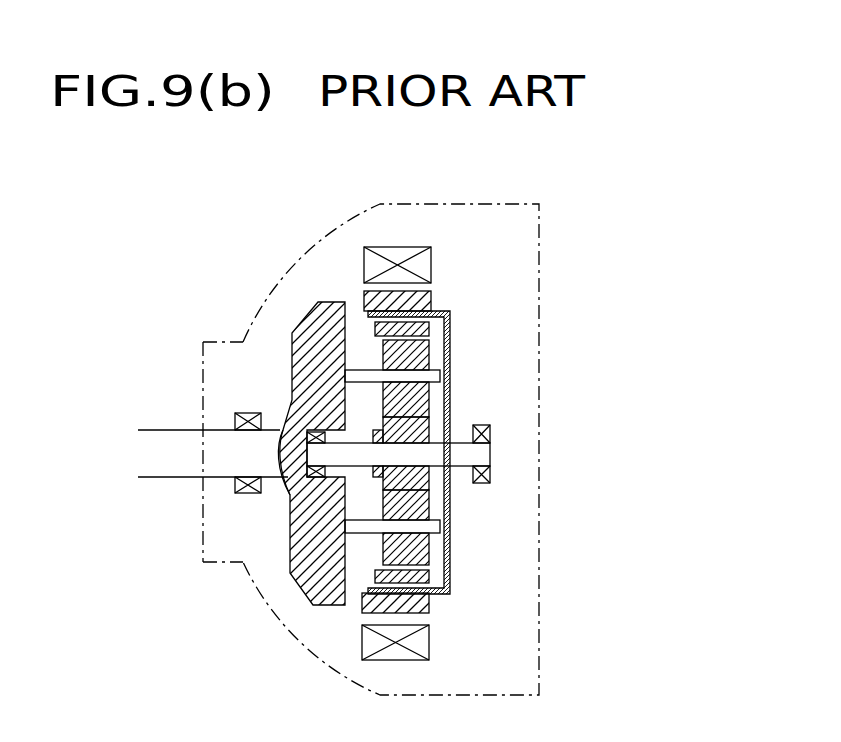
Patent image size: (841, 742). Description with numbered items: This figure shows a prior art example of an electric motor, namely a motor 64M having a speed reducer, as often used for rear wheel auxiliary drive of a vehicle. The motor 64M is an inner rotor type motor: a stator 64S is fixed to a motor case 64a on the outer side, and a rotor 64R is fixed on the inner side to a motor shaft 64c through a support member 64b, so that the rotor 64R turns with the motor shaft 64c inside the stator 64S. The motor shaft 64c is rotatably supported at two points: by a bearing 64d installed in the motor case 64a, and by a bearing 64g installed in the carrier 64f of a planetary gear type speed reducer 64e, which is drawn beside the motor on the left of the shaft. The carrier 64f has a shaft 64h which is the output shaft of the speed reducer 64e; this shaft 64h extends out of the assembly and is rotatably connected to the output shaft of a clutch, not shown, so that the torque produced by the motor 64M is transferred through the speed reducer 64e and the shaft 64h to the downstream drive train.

The motor case 64a is at (517, 204).
The stator 64S is at (380, 257).
The rotor 64R is at (430, 292).
The support member 64b is at (453, 345).
The motor shaft 64c is at (451, 473).
The bearing 64d is at (490, 433).
The planetary gear type speed reducer 64e is at (358, 330).
The carrier 64f is at (317, 340).
The shaft of the carrier 64h is at (225, 453).
The bearing 64g is at (290, 497).
The motor having a speed reducer 64M is at (526, 388).